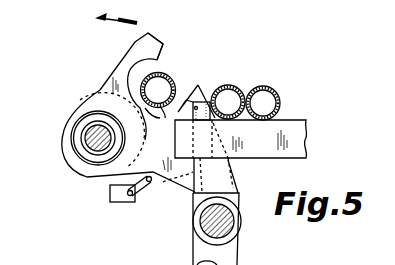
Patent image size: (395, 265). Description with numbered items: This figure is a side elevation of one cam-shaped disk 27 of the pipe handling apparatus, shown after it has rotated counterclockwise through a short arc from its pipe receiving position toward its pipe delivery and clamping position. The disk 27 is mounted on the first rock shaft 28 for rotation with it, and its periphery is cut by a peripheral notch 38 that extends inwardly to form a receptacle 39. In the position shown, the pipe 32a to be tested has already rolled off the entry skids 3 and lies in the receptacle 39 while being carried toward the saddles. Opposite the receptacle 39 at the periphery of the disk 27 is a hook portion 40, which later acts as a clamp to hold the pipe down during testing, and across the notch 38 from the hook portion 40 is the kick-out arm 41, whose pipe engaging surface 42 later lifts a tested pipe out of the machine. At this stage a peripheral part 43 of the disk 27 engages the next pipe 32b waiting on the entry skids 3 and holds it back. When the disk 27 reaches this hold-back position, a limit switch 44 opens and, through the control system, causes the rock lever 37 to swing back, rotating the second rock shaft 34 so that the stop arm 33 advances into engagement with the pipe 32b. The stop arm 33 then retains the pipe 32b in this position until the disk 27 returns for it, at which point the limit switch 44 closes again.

The entry skids 3 is at (308, 147).
The disk 27 is at (99, 89).
The first rock shaft 28 is at (88, 142).
The pipe to be tested 32a is at (181, 91).
The next pipe to be tested 32b is at (236, 91).
The stop arm 33 is at (231, 173).
The second rock shaft 34 is at (193, 219).
The rock lever 37 is at (238, 256).
The peripheral notch 38 is at (140, 72).
The receptacle 39 is at (153, 155).
The hook portion 40 is at (154, 125).
The kick-out arm 41 is at (135, 50).
The pipe engaging surface 42 is at (163, 50).
The peripheral part 43 is at (168, 186).
The limit switch 44 is at (107, 198).